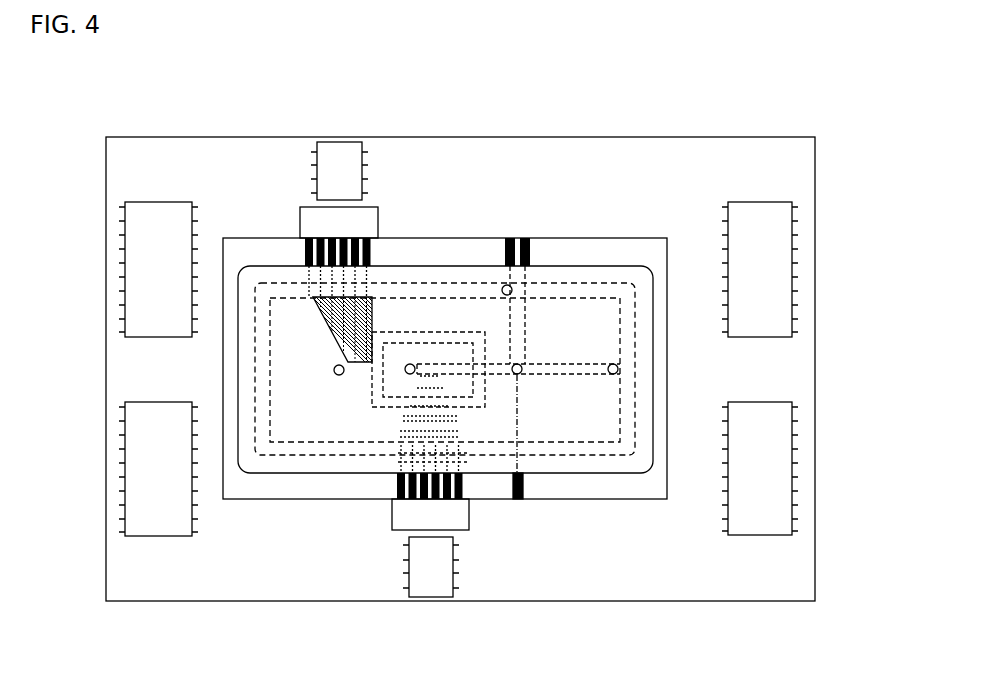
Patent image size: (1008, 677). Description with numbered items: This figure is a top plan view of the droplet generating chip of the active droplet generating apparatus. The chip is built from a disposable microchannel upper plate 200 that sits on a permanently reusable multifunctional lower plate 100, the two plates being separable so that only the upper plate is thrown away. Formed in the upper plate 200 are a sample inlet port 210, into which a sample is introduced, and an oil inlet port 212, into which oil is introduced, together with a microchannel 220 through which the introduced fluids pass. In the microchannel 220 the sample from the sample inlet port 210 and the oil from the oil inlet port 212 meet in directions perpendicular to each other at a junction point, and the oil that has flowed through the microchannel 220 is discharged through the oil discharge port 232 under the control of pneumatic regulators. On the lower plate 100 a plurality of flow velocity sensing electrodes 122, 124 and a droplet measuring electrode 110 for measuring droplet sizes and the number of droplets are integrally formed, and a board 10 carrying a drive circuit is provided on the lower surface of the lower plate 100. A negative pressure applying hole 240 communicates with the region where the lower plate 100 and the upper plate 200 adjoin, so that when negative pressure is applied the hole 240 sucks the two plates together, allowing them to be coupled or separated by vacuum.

The board 10 is at (174, 573).
The multifunctional lower plate 100 is at (653, 487).
The droplet measuring electrode 110 is at (523, 492).
The flow velocity sensing electrode 122 is at (305, 253).
The flow velocity sensing electrode 124 is at (465, 487).
The disposable microchannel upper plate 200 is at (637, 268).
The sample inlet port 210 is at (339, 375).
The oil inlet port 212 is at (410, 364).
The microchannel 220 is at (540, 372).
The oil discharge port 232 is at (620, 369).
The negative pressure applying hole 240 is at (507, 285).